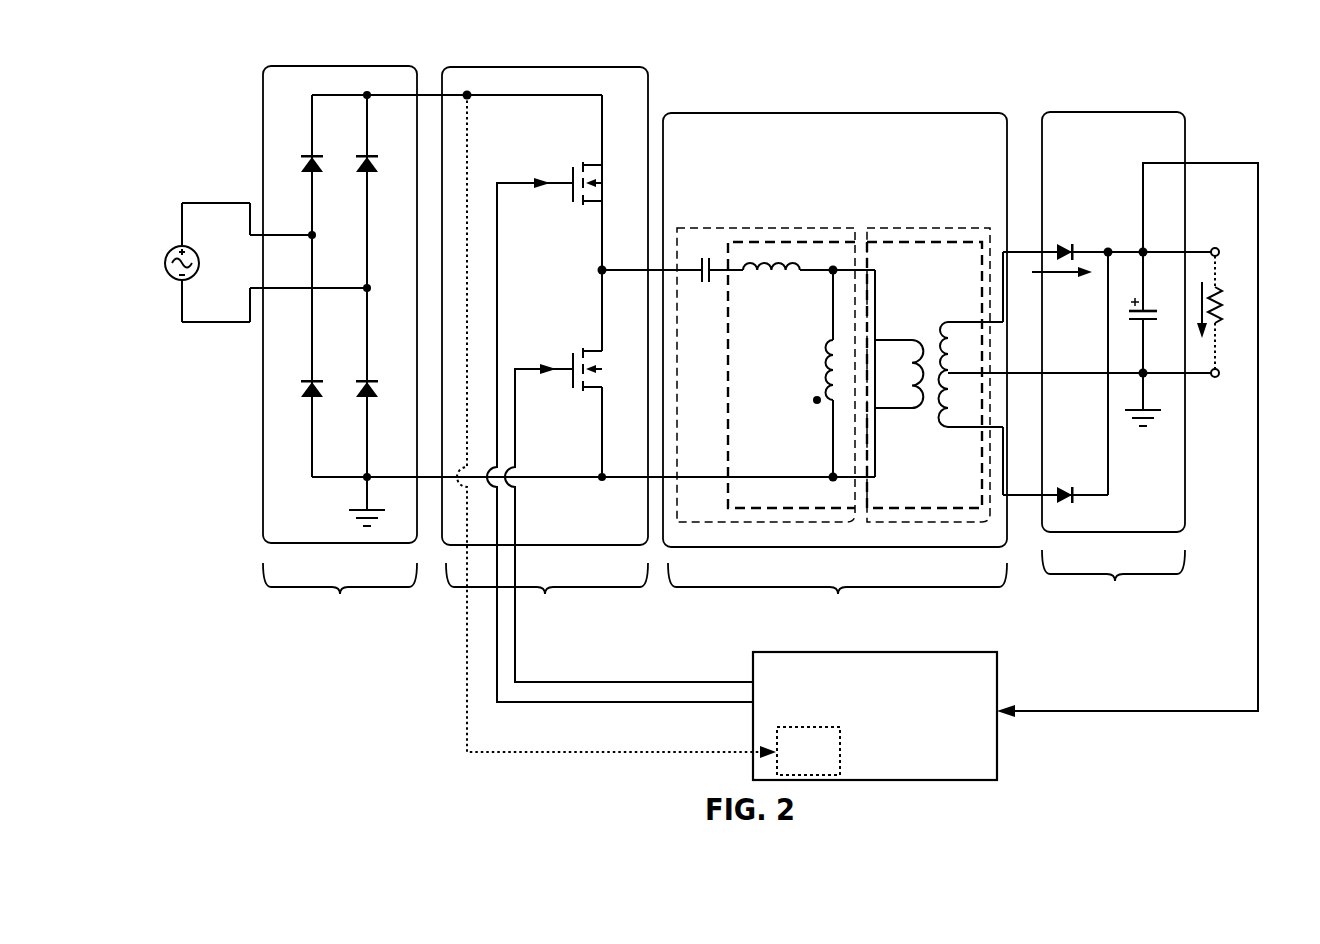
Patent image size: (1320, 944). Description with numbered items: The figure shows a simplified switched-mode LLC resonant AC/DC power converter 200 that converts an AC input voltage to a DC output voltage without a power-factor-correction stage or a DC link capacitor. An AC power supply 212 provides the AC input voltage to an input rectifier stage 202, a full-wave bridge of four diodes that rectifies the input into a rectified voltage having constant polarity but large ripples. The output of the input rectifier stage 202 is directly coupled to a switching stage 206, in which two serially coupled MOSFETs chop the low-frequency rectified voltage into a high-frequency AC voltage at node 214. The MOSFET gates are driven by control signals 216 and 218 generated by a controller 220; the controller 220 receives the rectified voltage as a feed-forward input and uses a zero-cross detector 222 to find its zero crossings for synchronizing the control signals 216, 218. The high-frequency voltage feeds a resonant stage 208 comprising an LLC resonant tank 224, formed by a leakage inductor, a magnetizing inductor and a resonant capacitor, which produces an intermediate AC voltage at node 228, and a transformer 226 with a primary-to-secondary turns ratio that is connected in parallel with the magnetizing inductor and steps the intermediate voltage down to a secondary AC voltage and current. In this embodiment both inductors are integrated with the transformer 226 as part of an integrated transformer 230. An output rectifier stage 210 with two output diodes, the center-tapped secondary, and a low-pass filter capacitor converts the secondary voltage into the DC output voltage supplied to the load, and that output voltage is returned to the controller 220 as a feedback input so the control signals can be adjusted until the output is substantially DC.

The switched-mode LLC resonant AC/DC power converter 200 is at (662, 36).
The input rectifier stage 202 is at (562, 363).
The switching stage 206 is at (597, 384).
The resonant stage 208 is at (939, 376).
The output rectifier stage 210 is at (1127, 414).
The AC power supply 212 is at (157, 220).
The node 214 is at (598, 270).
The control signal 216 is at (502, 178).
The control signal 218 is at (523, 367).
The controller 220 is at (727, 436).
The zero-cross detector 222 is at (808, 751).
The LLC resonant tank 224 is at (677, 228).
The transformer 226 is at (868, 240).
The node 228 is at (830, 271).
The integrated transformer 230 is at (827, 240).